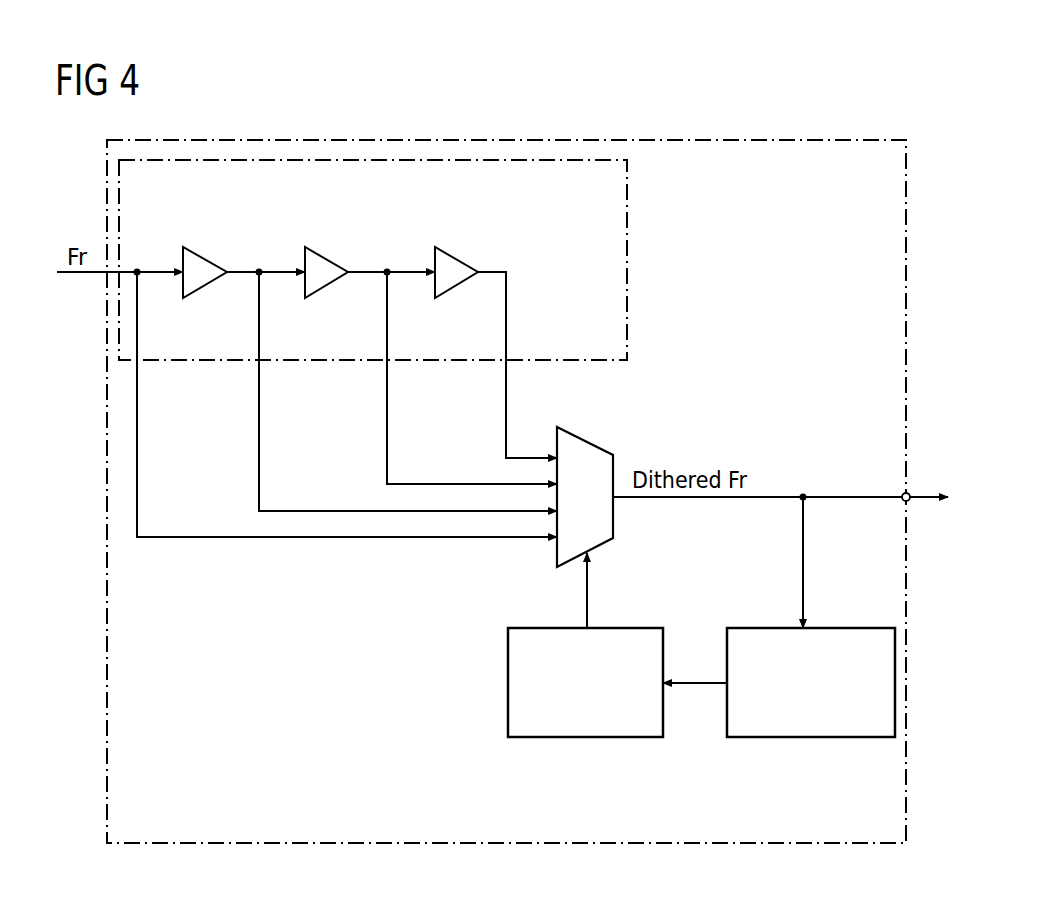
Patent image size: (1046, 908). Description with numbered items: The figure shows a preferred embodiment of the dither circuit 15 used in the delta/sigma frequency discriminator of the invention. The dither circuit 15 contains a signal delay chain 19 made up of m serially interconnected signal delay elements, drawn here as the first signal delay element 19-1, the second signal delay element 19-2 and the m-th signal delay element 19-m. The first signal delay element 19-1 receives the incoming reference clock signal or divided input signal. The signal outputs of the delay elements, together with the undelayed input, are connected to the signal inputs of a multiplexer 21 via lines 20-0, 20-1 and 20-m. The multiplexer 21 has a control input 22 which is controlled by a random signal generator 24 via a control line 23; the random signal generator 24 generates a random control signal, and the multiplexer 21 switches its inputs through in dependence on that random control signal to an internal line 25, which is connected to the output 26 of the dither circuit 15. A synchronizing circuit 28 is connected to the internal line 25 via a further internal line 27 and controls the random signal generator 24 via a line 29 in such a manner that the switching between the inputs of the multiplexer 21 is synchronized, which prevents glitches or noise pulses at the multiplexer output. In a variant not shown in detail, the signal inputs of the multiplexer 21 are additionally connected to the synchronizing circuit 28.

The dither circuit 15 is at (692, 140).
The signal delay chain 19 is at (627, 272).
The first signal delay element 19-1 is at (205, 258).
The second signal delay element 19-2 is at (327, 258).
The m-th signal delay element 19-m is at (455, 258).
The line 20-0 is at (172, 535).
The line 20-1 is at (301, 509).
The line 20-m is at (506, 325).
The multiplexer 21 is at (595, 437).
The control input 22 is at (592, 553).
The control line 23 is at (587, 595).
The random signal generator 24 is at (587, 737).
The internal line 25 is at (800, 495).
The output 26 is at (906, 493).
The internal line 27 is at (803, 550).
The synchronizing circuit 28 is at (812, 737).
The line 29 is at (698, 685).